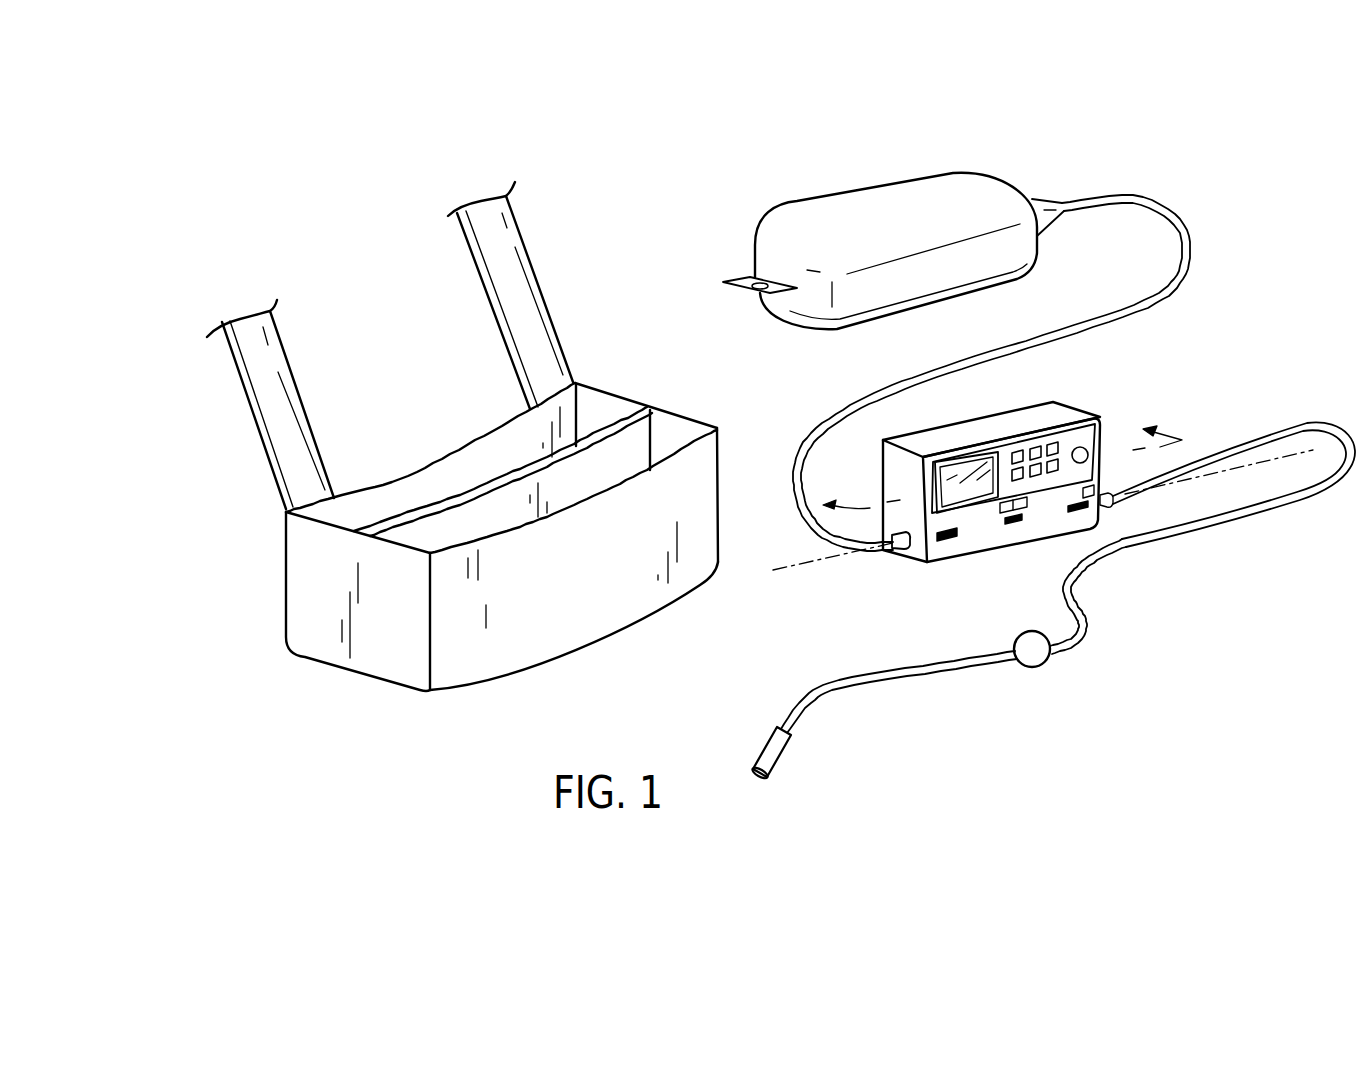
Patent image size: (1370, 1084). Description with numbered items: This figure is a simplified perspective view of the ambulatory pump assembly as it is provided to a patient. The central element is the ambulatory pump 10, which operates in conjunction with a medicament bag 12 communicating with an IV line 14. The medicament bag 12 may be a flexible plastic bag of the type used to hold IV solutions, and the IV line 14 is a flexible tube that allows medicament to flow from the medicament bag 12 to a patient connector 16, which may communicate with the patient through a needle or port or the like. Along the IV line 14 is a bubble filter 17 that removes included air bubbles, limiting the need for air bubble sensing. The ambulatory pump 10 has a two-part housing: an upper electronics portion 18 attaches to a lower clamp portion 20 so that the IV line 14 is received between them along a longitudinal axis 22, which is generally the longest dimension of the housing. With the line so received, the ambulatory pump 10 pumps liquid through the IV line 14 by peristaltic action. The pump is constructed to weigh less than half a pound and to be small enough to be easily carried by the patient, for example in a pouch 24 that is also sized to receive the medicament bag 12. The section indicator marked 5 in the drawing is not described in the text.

The section line 5- 5 is at (1043, 484).
The ambulatory pump 10 is at (1092, 393).
The medicament bag 12 is at (873, 203).
The IV line 14 is at (1187, 233).
The patient connector 16 is at (785, 763).
The bubble filter 17 is at (1036, 668).
The upper electronics portion 18 is at (973, 427).
The lower clamp portion 20 is at (970, 543).
The longitudinal axis 22 is at (1275, 457).
The pouch 24 is at (226, 592).